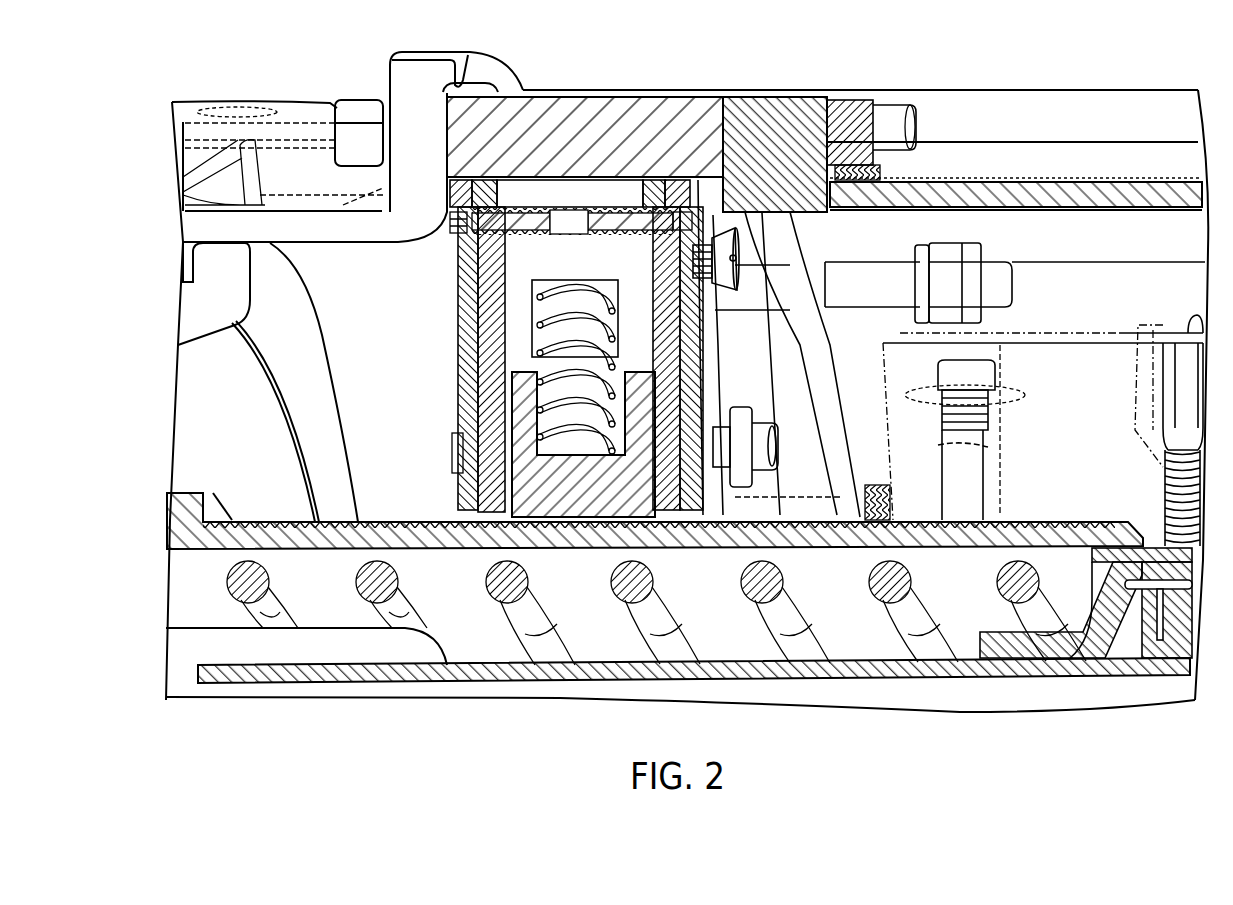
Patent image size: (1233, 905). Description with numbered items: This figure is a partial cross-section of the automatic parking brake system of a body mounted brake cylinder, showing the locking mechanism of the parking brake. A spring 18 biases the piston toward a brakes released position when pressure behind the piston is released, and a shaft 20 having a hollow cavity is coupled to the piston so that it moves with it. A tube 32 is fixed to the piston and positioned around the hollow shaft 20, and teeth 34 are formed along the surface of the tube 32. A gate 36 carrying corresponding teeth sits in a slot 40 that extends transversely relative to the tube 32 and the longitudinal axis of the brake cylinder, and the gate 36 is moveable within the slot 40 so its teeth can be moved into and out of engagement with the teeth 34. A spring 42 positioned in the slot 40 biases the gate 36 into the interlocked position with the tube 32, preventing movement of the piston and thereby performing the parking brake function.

The spring 18 is at (500, 599).
The shaft 20 is at (968, 676).
The tube 32 is at (176, 528).
The teeth 34 is at (238, 520).
The gate 36 is at (610, 497).
The slot 40 is at (505, 353).
The spring 42 is at (562, 292).